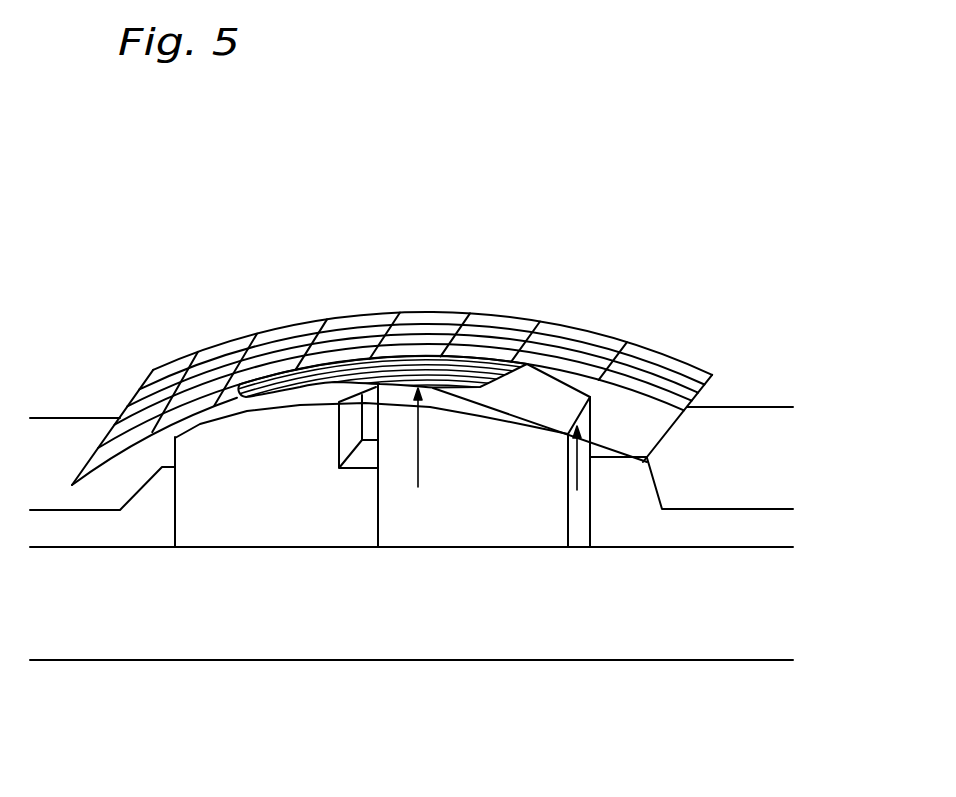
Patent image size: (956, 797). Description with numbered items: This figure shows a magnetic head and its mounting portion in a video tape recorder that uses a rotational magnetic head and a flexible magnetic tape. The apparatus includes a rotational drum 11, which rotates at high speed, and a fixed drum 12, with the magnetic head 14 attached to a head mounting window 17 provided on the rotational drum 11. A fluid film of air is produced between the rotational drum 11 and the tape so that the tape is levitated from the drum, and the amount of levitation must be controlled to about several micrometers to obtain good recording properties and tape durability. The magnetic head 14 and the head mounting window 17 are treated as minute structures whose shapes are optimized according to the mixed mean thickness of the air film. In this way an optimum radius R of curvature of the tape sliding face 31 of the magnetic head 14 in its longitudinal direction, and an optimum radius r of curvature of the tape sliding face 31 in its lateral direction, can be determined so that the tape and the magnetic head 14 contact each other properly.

The rotational drum 11 is at (728, 428).
The fixed drum 12 is at (163, 587).
The magnetic head 14 is at (405, 518).
The head mounting window 17 is at (140, 490).
The tape sliding face 31 is at (378, 382).